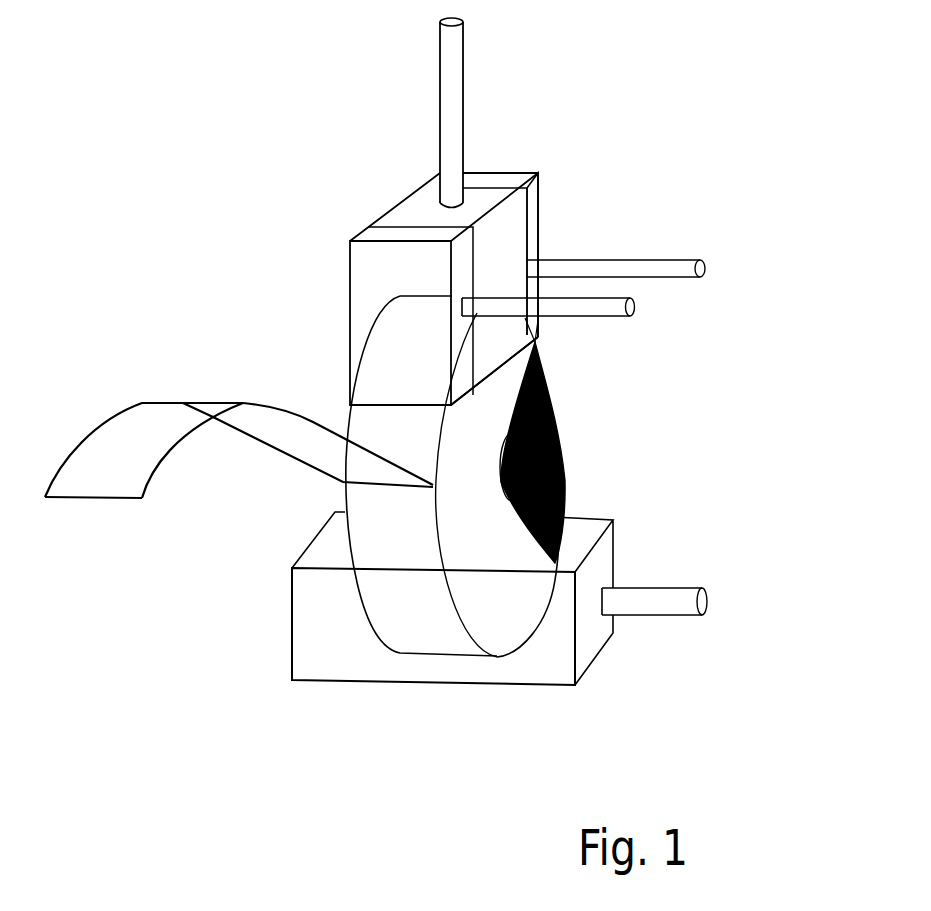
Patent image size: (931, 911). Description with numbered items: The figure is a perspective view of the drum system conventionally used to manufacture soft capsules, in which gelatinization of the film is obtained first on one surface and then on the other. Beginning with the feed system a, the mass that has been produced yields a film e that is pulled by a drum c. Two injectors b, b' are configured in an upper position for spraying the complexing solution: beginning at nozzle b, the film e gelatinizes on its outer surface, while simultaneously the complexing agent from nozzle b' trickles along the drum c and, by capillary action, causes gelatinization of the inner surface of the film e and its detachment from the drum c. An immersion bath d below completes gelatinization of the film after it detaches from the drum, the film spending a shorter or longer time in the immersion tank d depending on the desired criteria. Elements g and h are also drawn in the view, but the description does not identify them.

The feed system a is at (428, 102).
The injector b is at (359, 289).
The injector b' is at (662, 255).
The drum c is at (548, 405).
The immersion bath d is at (292, 626).
The film e is at (87, 428).
The tubes g is at (712, 275).
The sample wedge h is at (565, 472).